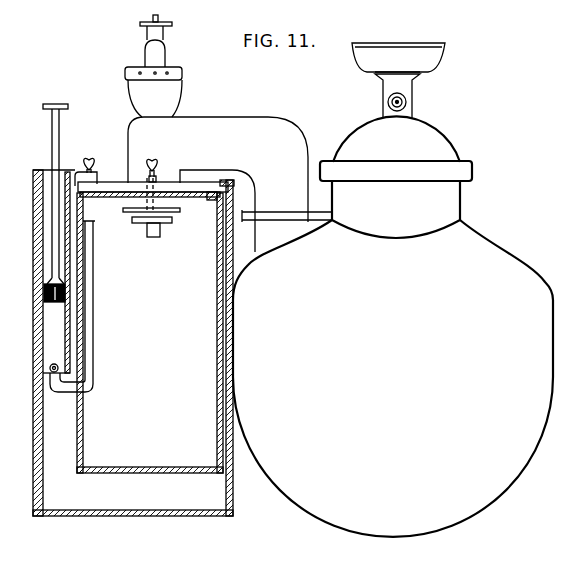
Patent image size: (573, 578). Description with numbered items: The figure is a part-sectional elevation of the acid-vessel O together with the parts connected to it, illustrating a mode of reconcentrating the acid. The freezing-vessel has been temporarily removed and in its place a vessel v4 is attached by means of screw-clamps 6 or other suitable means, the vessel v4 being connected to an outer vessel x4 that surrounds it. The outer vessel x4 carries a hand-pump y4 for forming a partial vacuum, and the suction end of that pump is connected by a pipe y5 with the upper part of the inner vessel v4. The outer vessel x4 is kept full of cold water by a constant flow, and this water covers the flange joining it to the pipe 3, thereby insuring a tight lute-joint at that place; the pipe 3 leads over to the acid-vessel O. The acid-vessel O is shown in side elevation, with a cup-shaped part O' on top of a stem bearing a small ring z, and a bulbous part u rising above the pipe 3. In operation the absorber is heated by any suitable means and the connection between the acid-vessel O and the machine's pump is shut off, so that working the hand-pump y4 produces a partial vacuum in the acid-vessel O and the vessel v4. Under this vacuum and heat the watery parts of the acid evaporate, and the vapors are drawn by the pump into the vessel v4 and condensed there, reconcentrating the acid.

The pipe 3 is at (230, 184).
The vessel u is at (153, 66).
The screw-clamps 6 is at (97, 168).
The hand-pump y4 is at (52, 313).
The pipe y5 is at (90, 326).
The vessel v4 is at (152, 316).
The outer vessel x4 is at (133, 343).
The acid-vessel O is at (393, 304).
The cup O' is at (398, 57).
The ring z is at (407, 101).